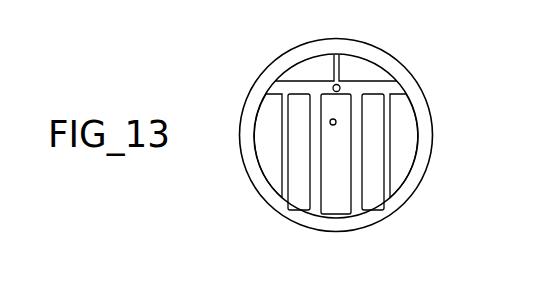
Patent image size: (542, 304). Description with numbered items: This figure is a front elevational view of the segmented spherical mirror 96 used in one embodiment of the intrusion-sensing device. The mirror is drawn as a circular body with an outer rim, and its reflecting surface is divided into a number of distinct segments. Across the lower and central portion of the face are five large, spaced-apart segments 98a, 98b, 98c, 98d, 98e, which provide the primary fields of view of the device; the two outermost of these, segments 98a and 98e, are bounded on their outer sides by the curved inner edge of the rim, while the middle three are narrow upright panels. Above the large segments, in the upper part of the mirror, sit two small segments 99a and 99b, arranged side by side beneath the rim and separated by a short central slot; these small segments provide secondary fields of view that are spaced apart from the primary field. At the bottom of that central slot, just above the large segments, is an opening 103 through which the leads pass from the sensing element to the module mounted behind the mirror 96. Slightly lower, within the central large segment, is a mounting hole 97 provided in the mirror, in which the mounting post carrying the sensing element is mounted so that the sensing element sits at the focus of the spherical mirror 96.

The segmented spherical mirror 96 is at (305, 46).
The small segment 99a is at (291, 72).
The small segment 99b is at (374, 72).
The opening 103 is at (337, 84).
The mounting hole 97 is at (336, 121).
The large segment 98a is at (261, 144).
The large segment 98b is at (302, 193).
The large segment 98c is at (335, 202).
The large segment 98d is at (372, 200).
The large segment 98e is at (405, 152).